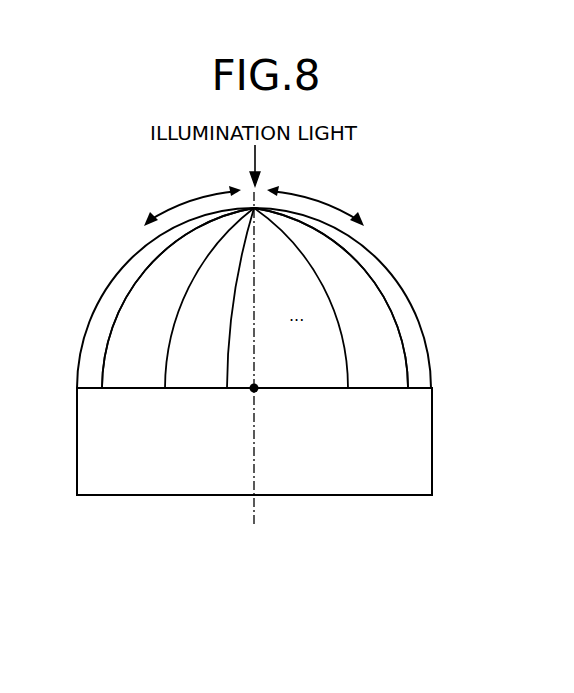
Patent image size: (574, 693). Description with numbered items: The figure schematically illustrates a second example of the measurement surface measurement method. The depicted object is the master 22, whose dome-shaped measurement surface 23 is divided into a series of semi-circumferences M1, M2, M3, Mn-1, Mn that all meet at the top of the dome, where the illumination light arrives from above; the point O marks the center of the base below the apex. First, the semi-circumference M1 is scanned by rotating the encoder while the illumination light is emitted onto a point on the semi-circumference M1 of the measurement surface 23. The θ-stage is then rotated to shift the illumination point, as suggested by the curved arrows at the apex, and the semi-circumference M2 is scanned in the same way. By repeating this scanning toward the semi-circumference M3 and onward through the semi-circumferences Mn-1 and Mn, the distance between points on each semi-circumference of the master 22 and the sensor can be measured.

The master 22 is at (383, 221).
The measurement surface 23 is at (408, 294).
The semi-circumference M1 is at (102, 358).
The semi-circumference M2 is at (165, 358).
The semi-circumference M3 is at (227, 358).
The semi-circumference Mn-1 is at (348, 358).
The semi-circumference Mn is at (408, 358).
The center point O is at (257, 391).